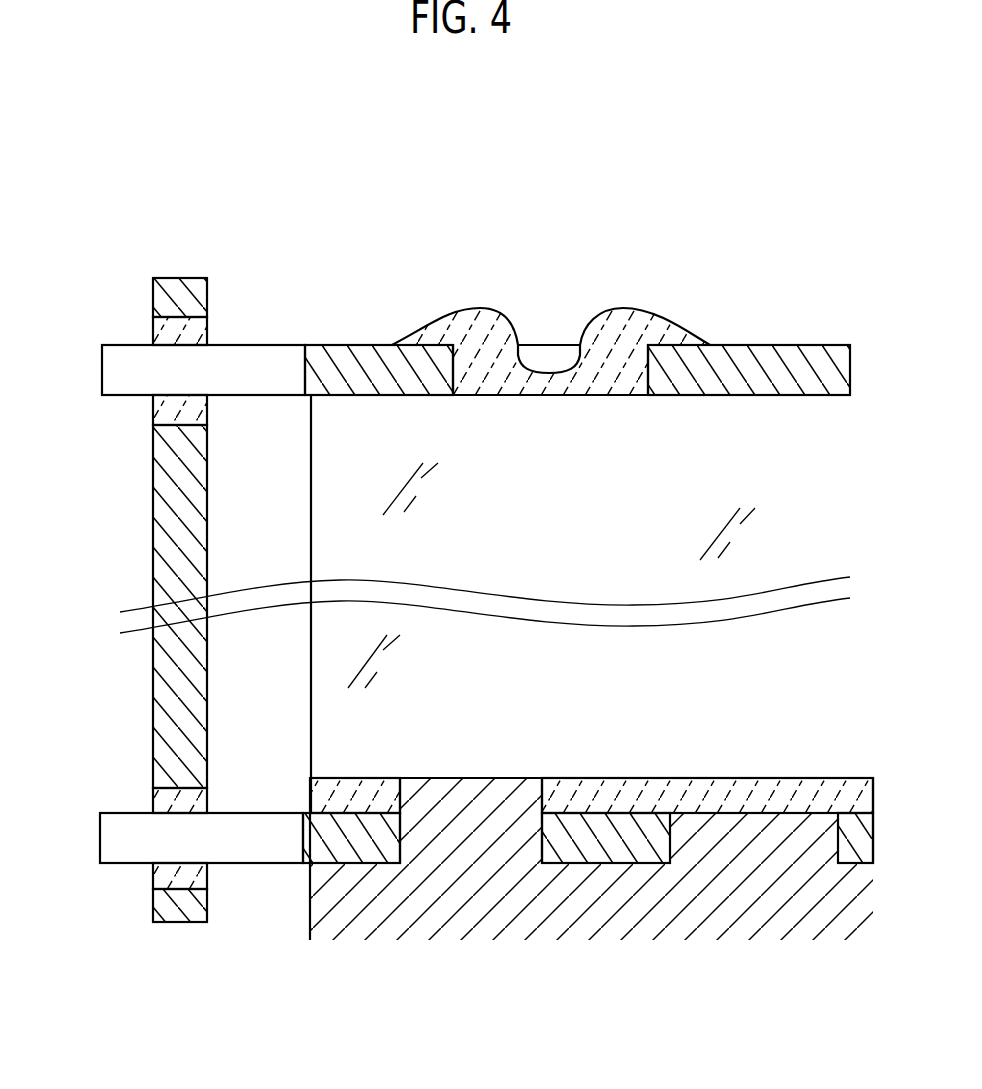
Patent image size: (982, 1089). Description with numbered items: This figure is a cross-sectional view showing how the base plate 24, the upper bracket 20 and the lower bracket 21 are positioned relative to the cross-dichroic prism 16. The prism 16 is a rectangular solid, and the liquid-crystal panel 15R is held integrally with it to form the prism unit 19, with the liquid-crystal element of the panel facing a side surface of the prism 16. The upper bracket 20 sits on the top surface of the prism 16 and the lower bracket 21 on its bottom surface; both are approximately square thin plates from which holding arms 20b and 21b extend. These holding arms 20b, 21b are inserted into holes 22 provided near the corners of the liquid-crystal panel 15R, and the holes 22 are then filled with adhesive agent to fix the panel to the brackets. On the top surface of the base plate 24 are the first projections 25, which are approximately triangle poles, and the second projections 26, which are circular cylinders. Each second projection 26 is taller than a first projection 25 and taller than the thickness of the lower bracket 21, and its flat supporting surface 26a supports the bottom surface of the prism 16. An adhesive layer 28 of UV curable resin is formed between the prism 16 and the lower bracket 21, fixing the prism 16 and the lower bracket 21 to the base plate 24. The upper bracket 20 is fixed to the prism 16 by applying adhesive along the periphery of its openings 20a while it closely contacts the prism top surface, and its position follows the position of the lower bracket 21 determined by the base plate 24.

The prism unit 19 is at (468, 216).
The upper bracket 20 is at (267, 345).
The circular openings 20a is at (547, 352).
The holding arms 20b is at (150, 368).
The holes 22 is at (153, 318).
The liquid-crystal panel 15R is at (178, 541).
The cross-dichroic prism 16 is at (340, 468).
The base plate 24 is at (494, 942).
The second projections 26 is at (503, 796).
The flat supporting surface 26a is at (477, 780).
The adhesive layer 28 is at (318, 792).
The first projections 25 is at (742, 798).
The lower bracket 21 is at (263, 865).
The holding arms 21b is at (150, 838).